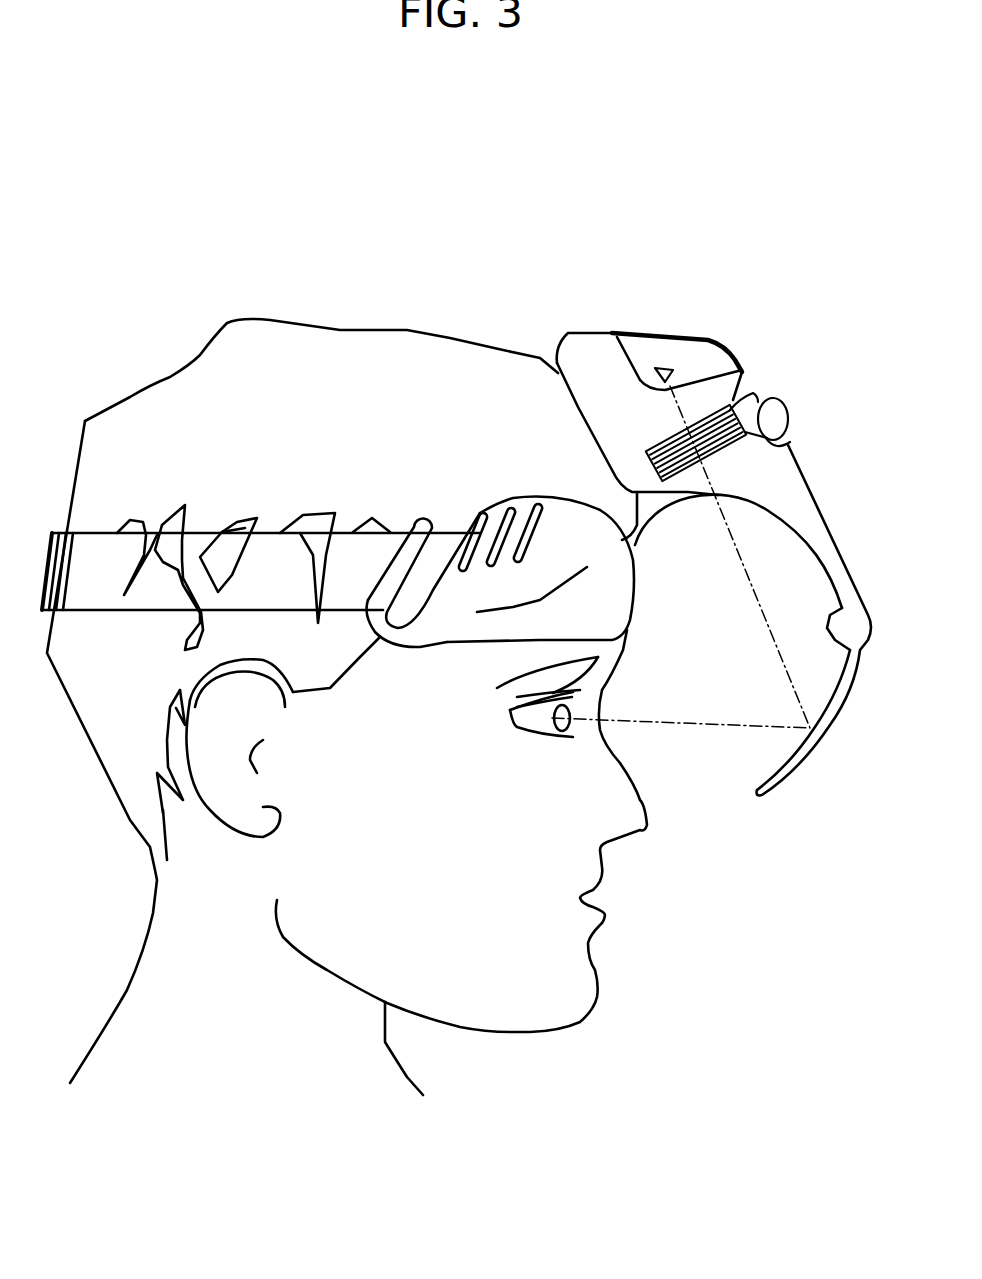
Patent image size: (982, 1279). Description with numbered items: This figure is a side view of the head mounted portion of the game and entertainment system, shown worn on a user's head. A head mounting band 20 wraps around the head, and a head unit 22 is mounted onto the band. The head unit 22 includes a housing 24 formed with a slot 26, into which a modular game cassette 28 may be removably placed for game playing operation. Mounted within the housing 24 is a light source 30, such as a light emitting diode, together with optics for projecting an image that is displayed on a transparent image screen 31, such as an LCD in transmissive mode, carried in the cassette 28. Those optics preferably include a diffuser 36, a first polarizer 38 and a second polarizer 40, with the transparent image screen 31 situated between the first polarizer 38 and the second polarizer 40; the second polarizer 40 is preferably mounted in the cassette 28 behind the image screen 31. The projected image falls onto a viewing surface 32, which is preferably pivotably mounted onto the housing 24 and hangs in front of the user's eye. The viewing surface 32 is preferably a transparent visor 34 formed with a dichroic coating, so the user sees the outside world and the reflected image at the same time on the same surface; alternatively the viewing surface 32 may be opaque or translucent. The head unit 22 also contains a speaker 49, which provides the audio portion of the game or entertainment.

The head mounting band 20 is at (50, 553).
The head unit 22 is at (622, 603).
The housing 24 is at (805, 497).
The slot 26 is at (787, 443).
The modular game cassette 28 is at (775, 412).
The light source 30 is at (672, 372).
The transparent image screen 31 is at (755, 395).
The viewing surface 32 is at (826, 697).
The transparent visor 34 is at (775, 790).
The diffuser 36 is at (740, 388).
The first polarizer 38 is at (645, 452).
The second polarizer 40 is at (688, 493).
The speaker 49 is at (507, 500).